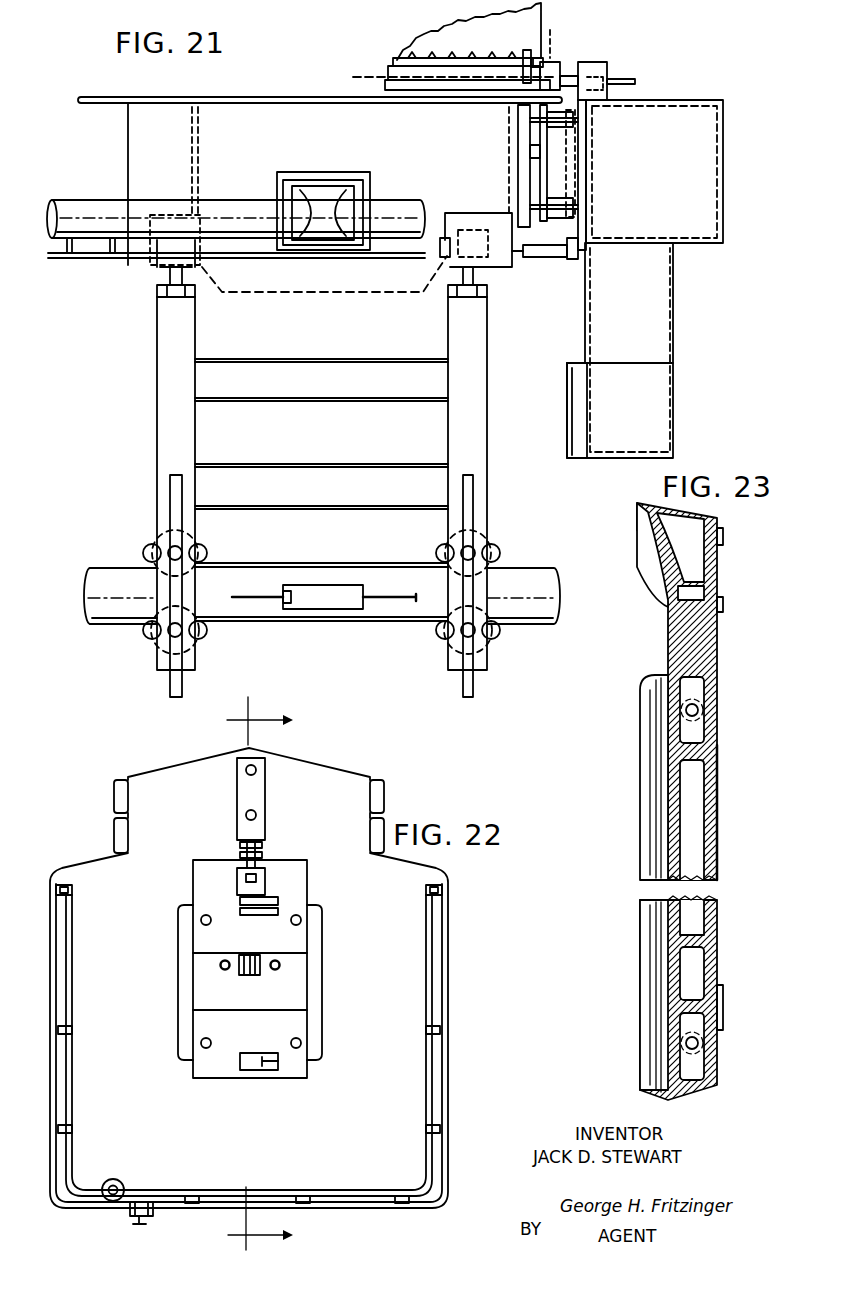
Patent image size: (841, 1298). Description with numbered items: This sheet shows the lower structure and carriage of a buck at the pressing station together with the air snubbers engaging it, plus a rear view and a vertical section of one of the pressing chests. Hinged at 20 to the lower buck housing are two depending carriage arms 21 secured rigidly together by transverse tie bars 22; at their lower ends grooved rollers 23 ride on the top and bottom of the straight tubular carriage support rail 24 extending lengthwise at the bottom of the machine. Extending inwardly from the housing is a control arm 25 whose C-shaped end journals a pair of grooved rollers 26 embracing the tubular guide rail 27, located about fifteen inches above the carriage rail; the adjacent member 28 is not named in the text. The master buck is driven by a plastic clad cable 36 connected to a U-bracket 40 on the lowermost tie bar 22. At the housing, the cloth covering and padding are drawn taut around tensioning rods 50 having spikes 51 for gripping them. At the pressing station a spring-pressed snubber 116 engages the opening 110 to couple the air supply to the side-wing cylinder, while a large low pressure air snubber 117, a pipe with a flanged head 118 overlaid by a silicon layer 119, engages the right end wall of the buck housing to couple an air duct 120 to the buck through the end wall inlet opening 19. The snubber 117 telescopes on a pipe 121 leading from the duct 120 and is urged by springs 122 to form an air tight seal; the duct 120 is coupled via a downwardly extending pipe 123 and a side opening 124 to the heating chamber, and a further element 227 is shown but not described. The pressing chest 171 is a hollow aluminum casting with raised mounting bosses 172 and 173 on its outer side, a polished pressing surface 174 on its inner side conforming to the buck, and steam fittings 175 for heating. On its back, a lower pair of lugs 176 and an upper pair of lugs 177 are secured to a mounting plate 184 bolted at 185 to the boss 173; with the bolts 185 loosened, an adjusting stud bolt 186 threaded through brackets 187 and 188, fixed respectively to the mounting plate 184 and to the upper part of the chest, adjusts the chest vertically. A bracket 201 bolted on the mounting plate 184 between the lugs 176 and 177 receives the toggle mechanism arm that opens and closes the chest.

In FIG. 21, the inlet opening 19 is at (509, 126).
In FIG. 21, the hinge 20 is at (213, 263).
In FIG. 21, the carriage arms 21 is at (160, 423).
In FIG. 21, the transverse tie bars 22 is at (333, 388).
In FIG. 21, the grooved rollers 23 is at (150, 567).
In FIG. 22, the grooved rollers 23 is at (273, 973).
In FIG. 21, the carriage support rail 24 is at (530, 612).
In FIG. 21, the control arm 25 is at (297, 165).
In FIG. 21, the grooved rollers 26 is at (335, 208).
In FIG. 21, the tubular guide rail 27 is at (232, 215).
In FIG. 21, the rail 28 is at (70, 262).
In FIG. 21, the plastic clad cable 36 is at (422, 582).
In FIG. 21, the U-bracket 40 is at (333, 605).
In FIG. 21, the tensioning rods 50 is at (462, 62).
In FIG. 21, the spikes 51 is at (485, 62).
In FIG. 21, the opening 110 is at (553, 50).
In FIG. 21, the spring-pressed snubber 116 is at (572, 63).
In FIG. 21, the low pressure air snubber 117 is at (548, 236).
In FIG. 21, the flanged head 118 is at (520, 153).
In FIG. 21, the silicon layer 119 is at (540, 188).
In FIG. 21, the air duct 120 is at (697, 132).
In FIG. 21, the pipe 121 is at (585, 195).
In FIG. 21, the springs 122 is at (545, 150).
In FIG. 21, the downwardly extending pipe 123 is at (660, 320).
In FIG. 21, the side opening 124 is at (567, 398).
In FIG. 21, the cylinder 227 is at (568, 262).
In FIG. 23, the pressing chest 171 is at (716, 656).
In FIG. 22, the pressing chest 171 is at (410, 990).
In FIG. 23, the mounting boss 172 is at (723, 607).
In FIG. 23, the mounting boss 173 is at (723, 753).
In FIG. 22, the mounting boss 173 is at (313, 1023).
In FIG. 23, the pressing surface 174 is at (667, 755).
In FIG. 22, the fittings 175 is at (440, 937).
In FIG. 22, the lower lugs 176 is at (288, 1066).
In FIG. 22, the upper lugs 177 is at (282, 903).
In FIG. 22, the mounting plate 184 is at (303, 892).
In FIG. 22, the bolts 185 is at (292, 926).
In FIG. 22, the adjusting stud bolt 186 is at (240, 851).
In FIG. 22, the bracket 187 is at (237, 875).
In FIG. 22, the bracket 188 is at (266, 810).
In FIG. 22, the bracket 201 is at (236, 977).